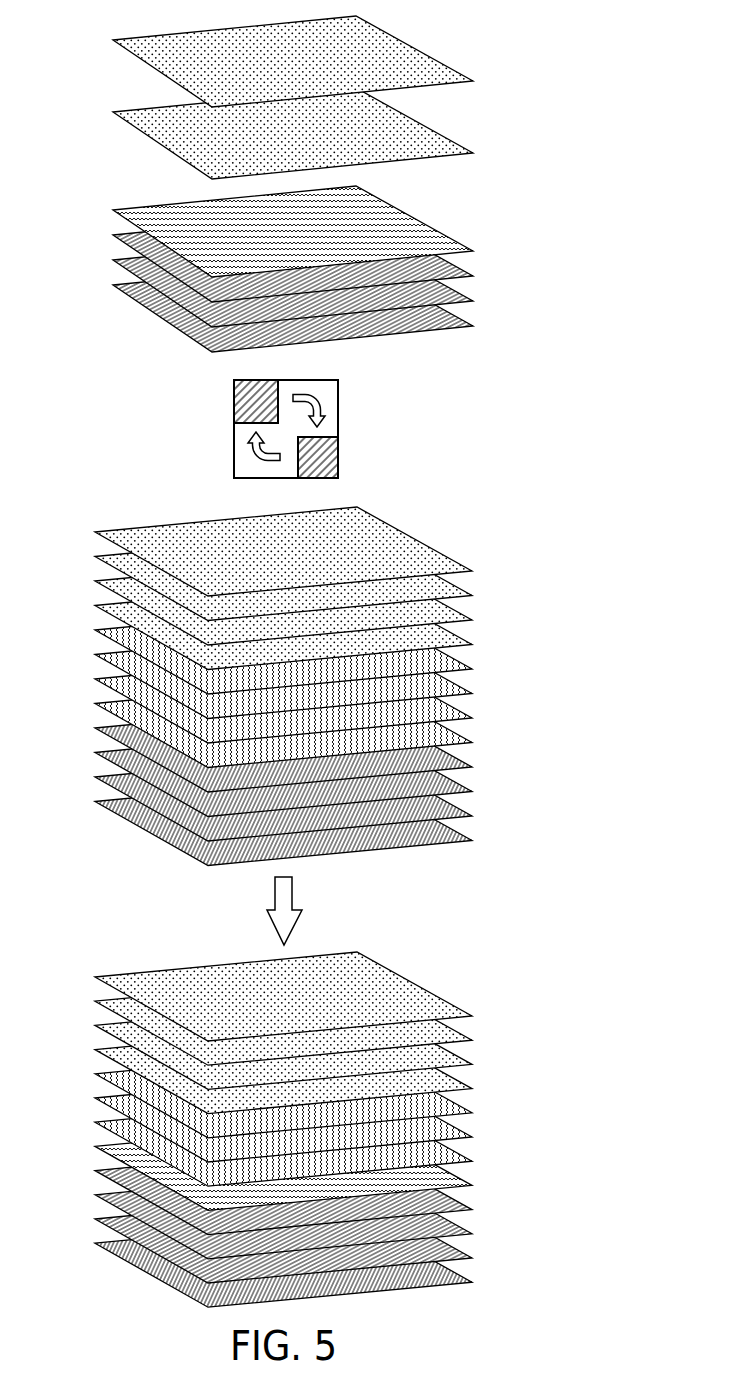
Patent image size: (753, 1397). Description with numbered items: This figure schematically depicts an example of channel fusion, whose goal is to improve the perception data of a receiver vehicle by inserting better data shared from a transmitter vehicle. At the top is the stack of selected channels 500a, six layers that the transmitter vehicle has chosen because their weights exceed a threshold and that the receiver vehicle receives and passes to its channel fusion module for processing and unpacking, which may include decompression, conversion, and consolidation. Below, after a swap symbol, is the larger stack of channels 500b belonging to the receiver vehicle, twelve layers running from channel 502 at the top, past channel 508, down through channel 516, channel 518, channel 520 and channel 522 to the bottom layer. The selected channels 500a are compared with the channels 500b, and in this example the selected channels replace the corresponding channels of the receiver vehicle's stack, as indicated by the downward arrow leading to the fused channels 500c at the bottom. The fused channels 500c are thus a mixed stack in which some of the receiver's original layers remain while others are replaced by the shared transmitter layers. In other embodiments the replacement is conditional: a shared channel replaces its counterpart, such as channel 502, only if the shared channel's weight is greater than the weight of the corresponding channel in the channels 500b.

The selected channels 500a is at (361, 181).
The channels of the receiver vehicle 500b is at (386, 637).
The fused channels 500c is at (385, 1081).
The channel 502 is at (456, 567).
The channel 508 is at (456, 640).
The channel 516 is at (456, 738).
The channel 518 is at (456, 762).
The channel 520 is at (456, 787).
The channel 522 is at (456, 811).